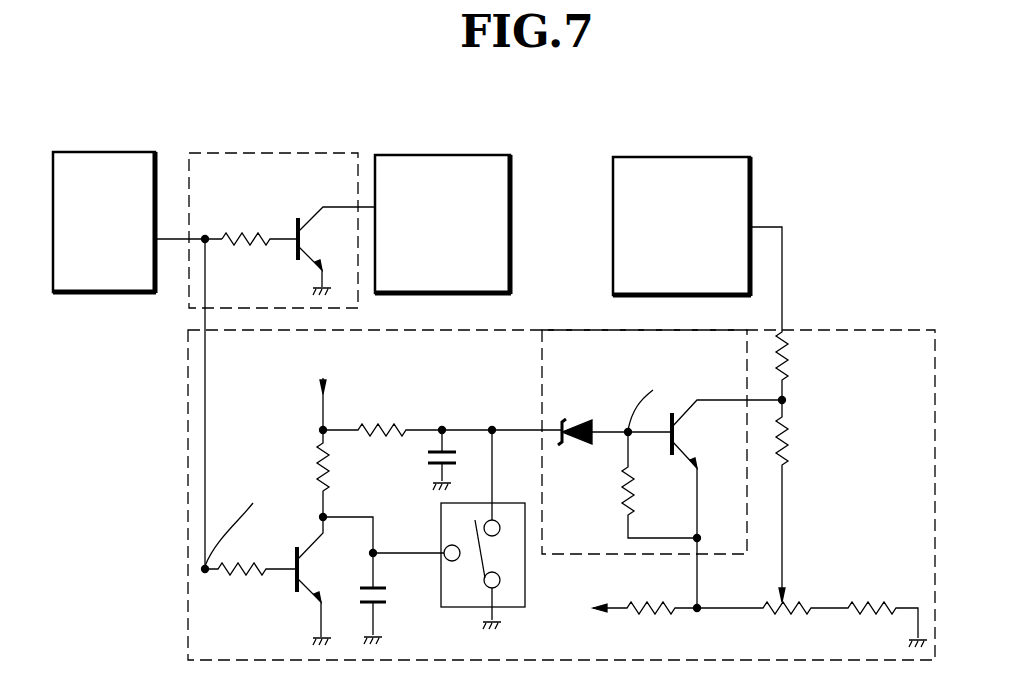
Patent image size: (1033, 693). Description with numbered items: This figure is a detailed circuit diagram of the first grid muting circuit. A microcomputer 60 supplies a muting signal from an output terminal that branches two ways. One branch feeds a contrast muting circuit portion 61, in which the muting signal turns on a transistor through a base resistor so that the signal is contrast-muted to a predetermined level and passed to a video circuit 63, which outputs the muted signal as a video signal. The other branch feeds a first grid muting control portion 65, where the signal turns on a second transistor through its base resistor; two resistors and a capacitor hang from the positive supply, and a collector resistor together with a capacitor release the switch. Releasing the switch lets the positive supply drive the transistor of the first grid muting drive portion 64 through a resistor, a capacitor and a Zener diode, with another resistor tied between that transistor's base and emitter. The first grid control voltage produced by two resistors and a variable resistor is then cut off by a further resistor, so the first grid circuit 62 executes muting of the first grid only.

The microcomputer 60 is at (128, 293).
The contrast muting circuit portion 61 is at (243, 153).
The first grid circuit 62 is at (752, 165).
The video circuit 63 is at (511, 218).
The first grid muting drive portion 64 is at (571, 330).
The first grid muting control portion 65 is at (862, 330).